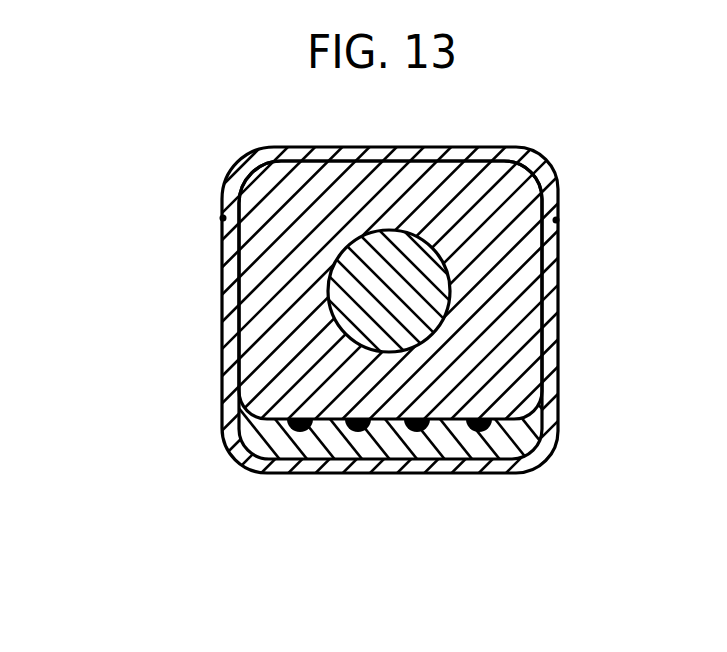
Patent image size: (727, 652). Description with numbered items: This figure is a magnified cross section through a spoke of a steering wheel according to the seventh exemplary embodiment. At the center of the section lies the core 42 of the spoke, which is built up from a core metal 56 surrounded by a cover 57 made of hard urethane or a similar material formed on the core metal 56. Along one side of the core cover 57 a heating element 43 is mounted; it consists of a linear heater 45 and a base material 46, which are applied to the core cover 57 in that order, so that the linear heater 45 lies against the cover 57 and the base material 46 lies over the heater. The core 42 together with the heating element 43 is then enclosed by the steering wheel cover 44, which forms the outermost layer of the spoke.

The core 42 is at (363, 310).
The heating element 43 is at (378, 386).
The steering wheel cover 44 is at (555, 265).
The linear heater 45 is at (298, 432).
The base material 46 is at (255, 443).
The core metal 56 is at (355, 293).
The cover 57 is at (267, 373).